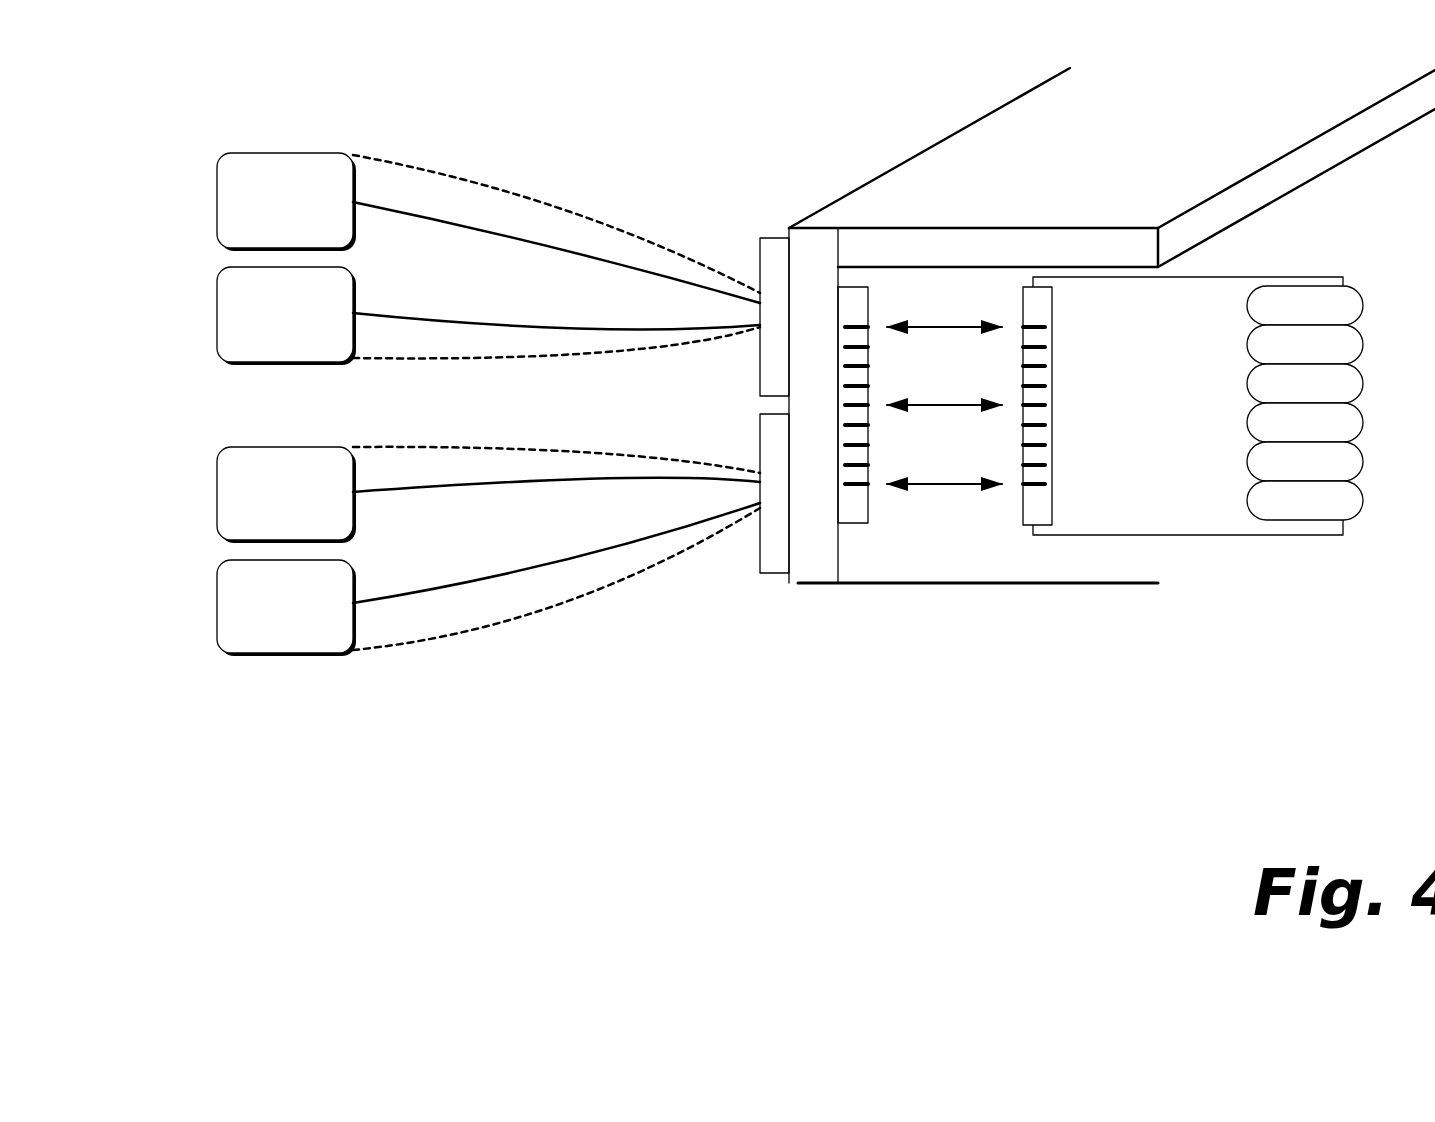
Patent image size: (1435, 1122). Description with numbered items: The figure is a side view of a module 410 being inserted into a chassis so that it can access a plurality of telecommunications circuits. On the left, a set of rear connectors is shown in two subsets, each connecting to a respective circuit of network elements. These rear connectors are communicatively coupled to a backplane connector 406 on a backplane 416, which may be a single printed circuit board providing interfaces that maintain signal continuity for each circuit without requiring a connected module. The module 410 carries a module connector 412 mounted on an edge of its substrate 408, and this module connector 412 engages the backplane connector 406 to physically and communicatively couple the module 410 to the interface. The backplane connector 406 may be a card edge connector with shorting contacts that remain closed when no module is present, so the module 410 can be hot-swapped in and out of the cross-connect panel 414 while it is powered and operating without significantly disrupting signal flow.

The backplane connector 406 is at (868, 527).
The substrate 408 is at (1209, 418).
The module 410 is at (1206, 441).
The module connector 412 is at (1035, 488).
The cross-connect panel 414 is at (1158, 117).
The backplane 416 is at (809, 525).